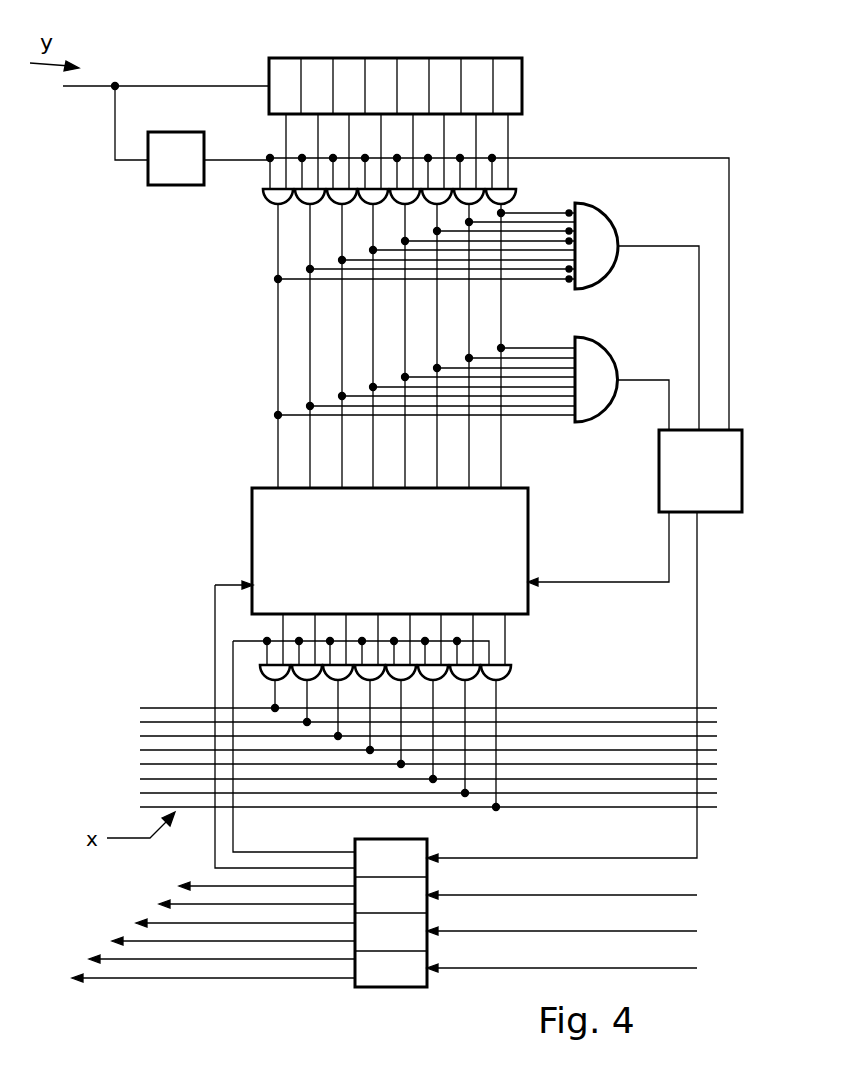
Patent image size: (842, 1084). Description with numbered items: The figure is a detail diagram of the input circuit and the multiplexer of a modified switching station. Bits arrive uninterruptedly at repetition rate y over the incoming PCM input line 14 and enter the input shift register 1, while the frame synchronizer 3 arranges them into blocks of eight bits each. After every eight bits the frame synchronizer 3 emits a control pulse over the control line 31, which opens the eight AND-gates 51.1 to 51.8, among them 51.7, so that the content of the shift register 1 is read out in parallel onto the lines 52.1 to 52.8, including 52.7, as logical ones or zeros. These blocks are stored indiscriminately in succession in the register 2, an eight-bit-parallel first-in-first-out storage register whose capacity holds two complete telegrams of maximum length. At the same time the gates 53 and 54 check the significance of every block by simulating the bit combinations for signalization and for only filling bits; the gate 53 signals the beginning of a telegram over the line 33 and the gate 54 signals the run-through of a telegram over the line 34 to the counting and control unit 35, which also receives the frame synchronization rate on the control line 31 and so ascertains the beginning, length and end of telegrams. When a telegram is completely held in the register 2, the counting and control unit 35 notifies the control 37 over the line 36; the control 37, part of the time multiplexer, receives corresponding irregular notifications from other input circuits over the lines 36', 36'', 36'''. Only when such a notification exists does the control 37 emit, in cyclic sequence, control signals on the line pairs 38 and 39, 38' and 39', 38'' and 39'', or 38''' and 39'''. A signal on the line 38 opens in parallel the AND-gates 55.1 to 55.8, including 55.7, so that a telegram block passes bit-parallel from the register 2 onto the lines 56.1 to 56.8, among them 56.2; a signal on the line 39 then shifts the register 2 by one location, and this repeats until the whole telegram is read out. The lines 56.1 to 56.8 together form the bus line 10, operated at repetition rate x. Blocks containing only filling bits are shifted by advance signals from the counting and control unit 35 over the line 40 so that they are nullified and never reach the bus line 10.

The input shift register 1 is at (478, 55).
The register 2 is at (532, 517).
The frame synchronizer 3 is at (167, 186).
The bus line 10 is at (437, 746).
The input line 14 is at (88, 87).
The control line 31 is at (612, 157).
The line 33 is at (645, 246).
The line 34 is at (637, 378).
The counting and control unit 35 is at (731, 513).
The line 36 is at (590, 687).
The line 36' is at (594, 890).
The line 36'' is at (596, 926).
The line 36''' is at (599, 963).
The control 37 is at (382, 990).
The line 38 is at (361, 745).
The control line 38' is at (252, 879).
The control line 38'' is at (230, 917).
The control line 38''' is at (207, 955).
The line 39 is at (285, 724).
The control line 39' is at (242, 898).
The control line 39'' is at (218, 936).
The control line 39''' is at (196, 974).
The line 40 is at (572, 581).
The AND-gate 51.1 is at (514, 197).
The AND-gate 51.7 is at (300, 204).
The AND-gate 51.8 is at (266, 203).
The line 52.1 is at (503, 318).
The line 52.7 is at (310, 328).
The line 52.8 is at (278, 313).
The gate 53 is at (598, 208).
The gate 54 is at (602, 344).
The AND-gate 55.1 is at (510, 665).
The AND-gate 55.7 is at (298, 681).
The AND-gate 55.8 is at (262, 667).
The line 56.1 is at (715, 806).
The line 56.2 is at (715, 792).
The line 56.8 is at (751, 752).